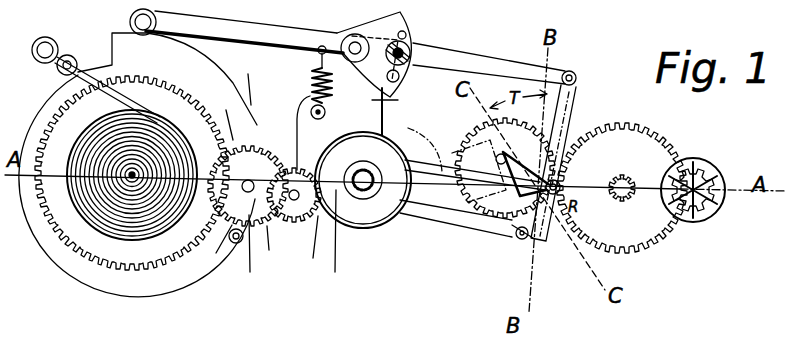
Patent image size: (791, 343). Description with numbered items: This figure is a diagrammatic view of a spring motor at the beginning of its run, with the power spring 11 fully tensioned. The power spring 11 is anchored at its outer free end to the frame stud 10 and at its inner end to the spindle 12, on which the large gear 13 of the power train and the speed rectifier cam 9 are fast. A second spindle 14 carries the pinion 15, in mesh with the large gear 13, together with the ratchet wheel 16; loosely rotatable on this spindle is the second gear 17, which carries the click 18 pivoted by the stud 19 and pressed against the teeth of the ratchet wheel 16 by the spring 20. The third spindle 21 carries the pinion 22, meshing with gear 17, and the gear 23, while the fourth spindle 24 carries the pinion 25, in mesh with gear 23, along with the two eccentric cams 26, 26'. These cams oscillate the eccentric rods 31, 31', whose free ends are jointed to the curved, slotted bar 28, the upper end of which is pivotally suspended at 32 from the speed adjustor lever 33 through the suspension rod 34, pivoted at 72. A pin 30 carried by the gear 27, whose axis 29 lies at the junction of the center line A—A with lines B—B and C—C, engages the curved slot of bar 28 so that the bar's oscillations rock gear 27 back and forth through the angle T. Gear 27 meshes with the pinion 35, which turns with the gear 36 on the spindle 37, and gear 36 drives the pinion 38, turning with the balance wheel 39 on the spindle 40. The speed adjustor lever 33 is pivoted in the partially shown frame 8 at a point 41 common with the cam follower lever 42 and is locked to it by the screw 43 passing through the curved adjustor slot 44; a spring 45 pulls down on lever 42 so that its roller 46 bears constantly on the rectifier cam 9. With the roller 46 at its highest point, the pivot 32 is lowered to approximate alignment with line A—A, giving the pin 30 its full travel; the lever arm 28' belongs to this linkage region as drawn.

The frame 8 is at (392, 111).
The speed rectifier cam 9 is at (118, 50).
The frame stud 10 is at (50, 40).
The power spring 11 is at (123, 102).
The spindle 12 is at (60, 262).
The large gear 13 is at (100, 281).
The second spindle 14 is at (257, 128).
The pinion 15 is at (206, 251).
The ratchet wheel 16 is at (224, 114).
The second gear 17 is at (246, 79).
The click 18 is at (250, 256).
The stud 19 is at (237, 244).
The spring 20 is at (273, 250).
The third spindle 21 is at (327, 133).
The pinion 22 is at (296, 222).
The gear 23 is at (310, 249).
The fourth spindle 24 is at (368, 200).
The pinion 25 is at (367, 169).
The eccentric cam 26 is at (425, 150).
The eccentric cam 26' is at (329, 244).
The gear 27 is at (517, 240).
The curved slotted bar 28 is at (546, 274).
The lever arm 28' is at (450, 240).
The axis 29 is at (500, 218).
The pin 30 is at (572, 128).
The eccentric rod 31 is at (413, 223).
The eccentric rod 31' is at (453, 195).
The pivot 32 is at (564, 188).
The speed adjustor lever 33 is at (489, 63).
The suspension rod 34 is at (576, 101).
The pinion 35 is at (640, 262).
The gear 36 is at (653, 152).
The spindle 37 is at (645, 259).
The pinion 38 is at (707, 167).
The balance wheel 39 is at (718, 208).
The spindle 40 is at (690, 222).
The common pivot point 41 is at (351, 36).
The cam follower lever 42 is at (244, 32).
The screw 43 is at (418, 50).
The curved adjustor slot 44 is at (410, 40).
The spring 45 is at (312, 75).
The roller 46 is at (130, 16).
The pivot 72 is at (577, 76).